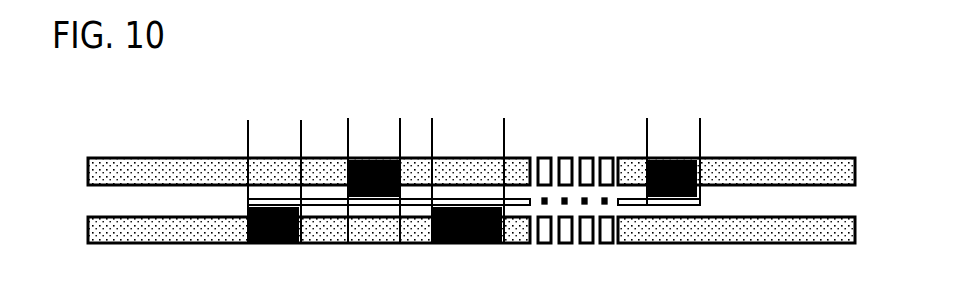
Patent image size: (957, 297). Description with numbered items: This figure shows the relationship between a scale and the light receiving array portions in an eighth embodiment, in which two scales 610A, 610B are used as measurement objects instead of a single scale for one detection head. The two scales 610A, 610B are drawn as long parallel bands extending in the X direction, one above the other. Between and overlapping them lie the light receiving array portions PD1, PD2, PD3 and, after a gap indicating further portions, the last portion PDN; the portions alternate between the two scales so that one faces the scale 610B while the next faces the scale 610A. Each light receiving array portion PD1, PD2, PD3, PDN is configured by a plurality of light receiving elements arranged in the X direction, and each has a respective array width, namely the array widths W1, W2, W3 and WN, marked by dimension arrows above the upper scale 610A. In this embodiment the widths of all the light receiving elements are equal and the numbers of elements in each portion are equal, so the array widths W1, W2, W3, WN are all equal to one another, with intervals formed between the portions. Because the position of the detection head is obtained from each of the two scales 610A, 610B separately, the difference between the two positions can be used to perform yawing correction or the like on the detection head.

The scale 610A is at (182, 168).
The scale 610B is at (187, 230).
The light receiving array portion PD1 is at (273, 224).
The light receiving array portion PD2 is at (374, 178).
The light receiving array portion PD3 is at (467, 224).
The light receiving array portion PDN is at (671, 178).
The array width W1 is at (301, 136).
The array width W2 is at (348, 136).
The array width W3 is at (432, 136).
The array width WN is at (647, 136).